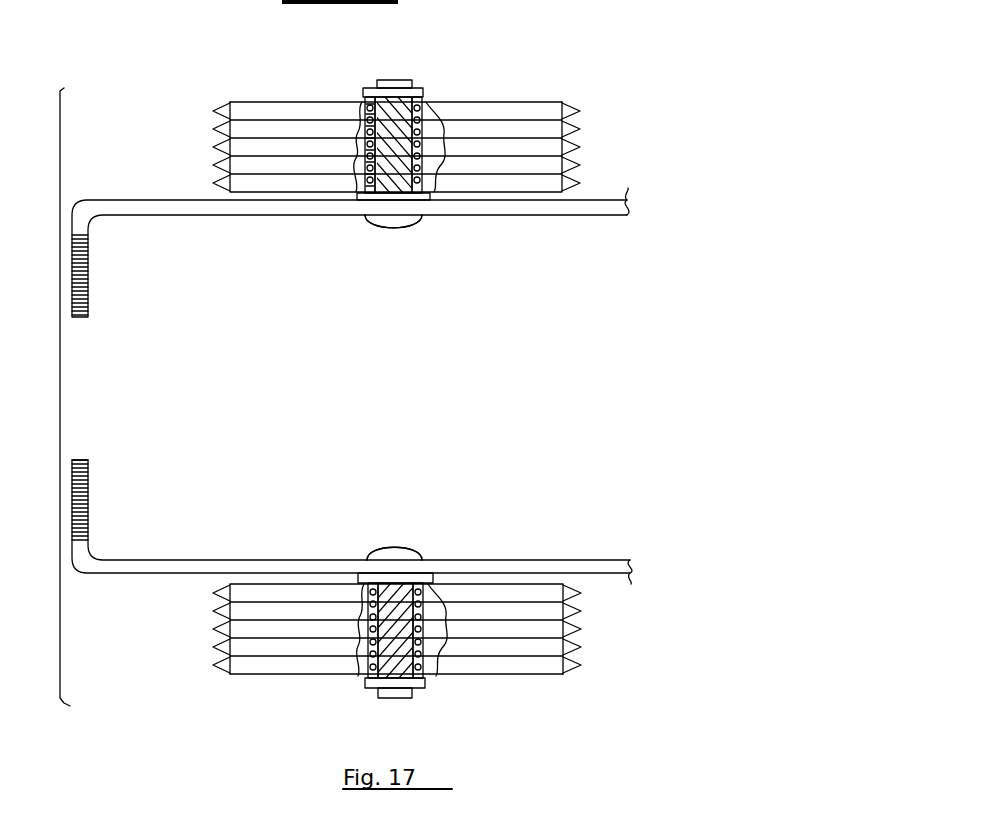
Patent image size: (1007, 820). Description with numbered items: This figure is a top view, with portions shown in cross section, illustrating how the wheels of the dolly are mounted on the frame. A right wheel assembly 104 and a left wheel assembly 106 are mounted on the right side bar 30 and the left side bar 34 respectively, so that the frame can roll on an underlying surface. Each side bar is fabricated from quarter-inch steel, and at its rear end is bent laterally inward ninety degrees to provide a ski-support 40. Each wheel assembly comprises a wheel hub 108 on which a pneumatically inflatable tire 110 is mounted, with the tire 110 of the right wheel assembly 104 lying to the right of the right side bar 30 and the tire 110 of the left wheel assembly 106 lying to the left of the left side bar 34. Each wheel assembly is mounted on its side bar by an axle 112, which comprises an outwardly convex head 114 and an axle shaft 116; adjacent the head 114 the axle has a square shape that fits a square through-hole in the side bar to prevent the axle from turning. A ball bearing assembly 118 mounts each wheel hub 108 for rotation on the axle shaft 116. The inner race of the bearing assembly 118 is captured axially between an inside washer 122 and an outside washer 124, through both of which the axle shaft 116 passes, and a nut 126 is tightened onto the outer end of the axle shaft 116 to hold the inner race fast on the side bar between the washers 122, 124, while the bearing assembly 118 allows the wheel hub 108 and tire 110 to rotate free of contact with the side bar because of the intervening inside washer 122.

The right side bar 30 is at (608, 560).
The left side bar 34 is at (613, 202).
The ski-support 40 is at (88, 277).
The right wheel assembly 104 is at (579, 682).
The left wheel assembly 106 is at (580, 100).
The wheel hub 108 is at (430, 108).
The pneumatically inflatable tire 110 is at (523, 98).
The axle 112 is at (370, 229).
The outwardly convex head 114 is at (402, 227).
The axle shaft 116 is at (393, 117).
The ball bearing assembly 118 is at (368, 145).
The inside washer 122 is at (425, 197).
The outside washer 124 is at (368, 93).
The nut 126 is at (382, 78).